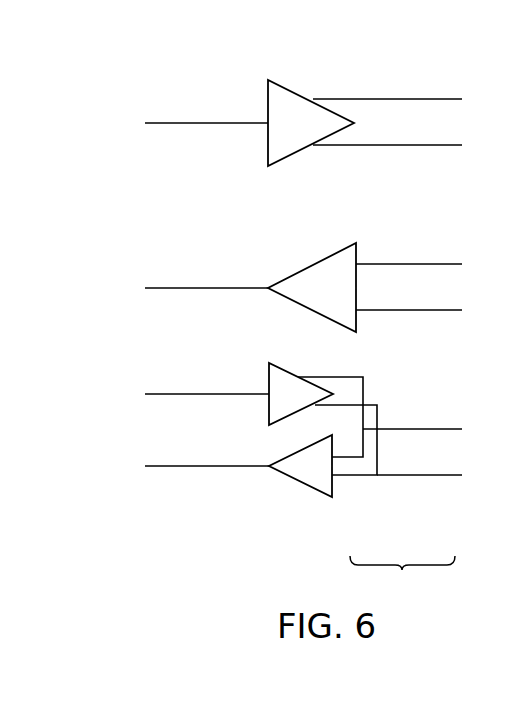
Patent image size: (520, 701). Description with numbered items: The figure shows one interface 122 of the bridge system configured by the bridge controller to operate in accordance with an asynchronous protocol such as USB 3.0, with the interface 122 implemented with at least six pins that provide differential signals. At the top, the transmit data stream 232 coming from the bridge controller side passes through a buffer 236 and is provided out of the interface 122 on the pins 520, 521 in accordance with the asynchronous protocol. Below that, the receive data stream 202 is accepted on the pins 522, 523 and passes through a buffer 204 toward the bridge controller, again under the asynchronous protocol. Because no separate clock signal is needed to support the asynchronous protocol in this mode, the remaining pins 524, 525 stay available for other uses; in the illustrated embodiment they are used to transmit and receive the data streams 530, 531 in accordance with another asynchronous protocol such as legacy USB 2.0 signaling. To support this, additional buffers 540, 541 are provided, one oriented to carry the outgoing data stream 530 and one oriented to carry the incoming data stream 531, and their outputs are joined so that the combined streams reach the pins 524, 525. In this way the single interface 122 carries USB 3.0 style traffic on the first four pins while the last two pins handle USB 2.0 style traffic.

The buffer 236 is at (300, 92).
The transmit data stream 232 is at (195, 123).
The pin 520 is at (492, 101).
The pin 521 is at (492, 144).
The buffer 204 is at (313, 262).
The receive data stream 202 is at (202, 288).
The pin 522 is at (492, 266).
The pin 523 is at (492, 311).
The additional buffer 540 is at (287, 370).
The additional buffer 541 is at (302, 483).
The data stream 530 is at (200, 394).
The data stream 531 is at (202, 466).
The pin 524 is at (492, 431).
The pin 525 is at (492, 476).
The interface 122 is at (402, 580).